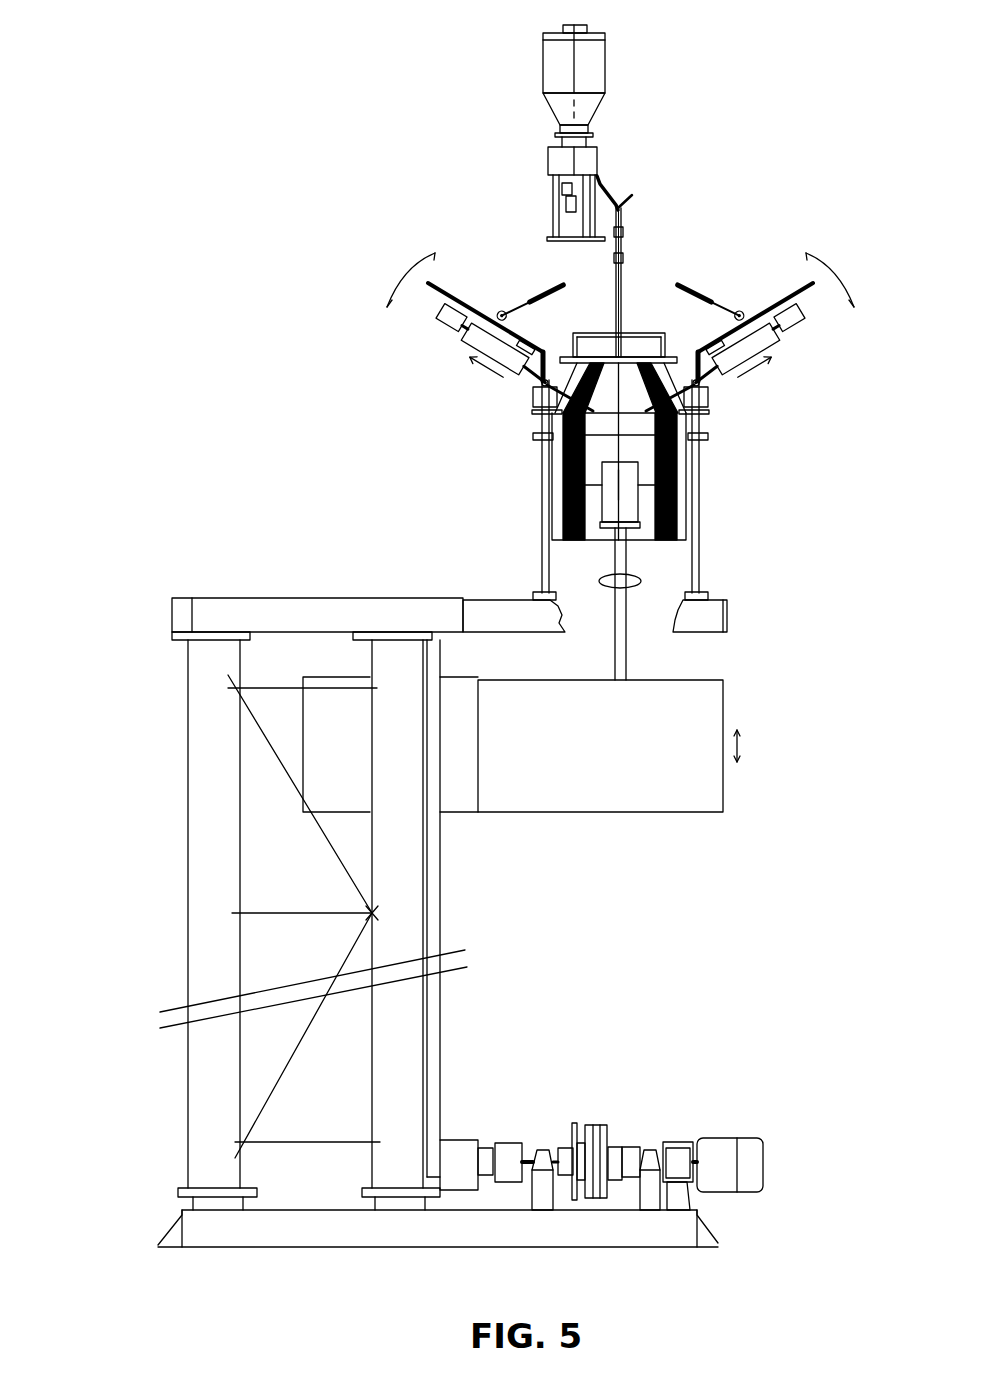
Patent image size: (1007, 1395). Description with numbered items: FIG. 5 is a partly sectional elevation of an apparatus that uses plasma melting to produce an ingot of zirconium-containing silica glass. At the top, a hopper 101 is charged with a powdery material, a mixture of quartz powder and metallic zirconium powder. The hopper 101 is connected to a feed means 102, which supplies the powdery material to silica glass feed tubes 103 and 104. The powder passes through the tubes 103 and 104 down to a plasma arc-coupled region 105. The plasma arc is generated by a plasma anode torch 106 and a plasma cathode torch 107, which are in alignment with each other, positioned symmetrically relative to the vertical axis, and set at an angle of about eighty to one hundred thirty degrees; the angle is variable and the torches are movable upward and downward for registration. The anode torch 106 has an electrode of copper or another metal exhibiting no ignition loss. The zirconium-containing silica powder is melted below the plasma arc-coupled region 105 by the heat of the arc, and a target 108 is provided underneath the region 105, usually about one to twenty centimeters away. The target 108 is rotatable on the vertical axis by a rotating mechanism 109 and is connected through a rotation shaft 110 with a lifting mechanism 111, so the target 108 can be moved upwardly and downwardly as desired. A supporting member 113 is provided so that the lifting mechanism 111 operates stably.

The hopper 101 is at (545, 58).
The feed means 102 is at (547, 158).
The silica glass feed tube 103 is at (604, 185).
The silica glass feed tube 104 is at (622, 258).
The plasma arc-coupled region 105 is at (619, 425).
The plasma anode torch 106 is at (465, 345).
The plasma cathode torch 107 is at (767, 347).
The target 108 is at (641, 473).
The rotating mechanism 109 is at (724, 707).
The rotation shaft 110 is at (628, 653).
The lifting mechanism 111 is at (172, 606).
The supporting member 113 is at (185, 775).